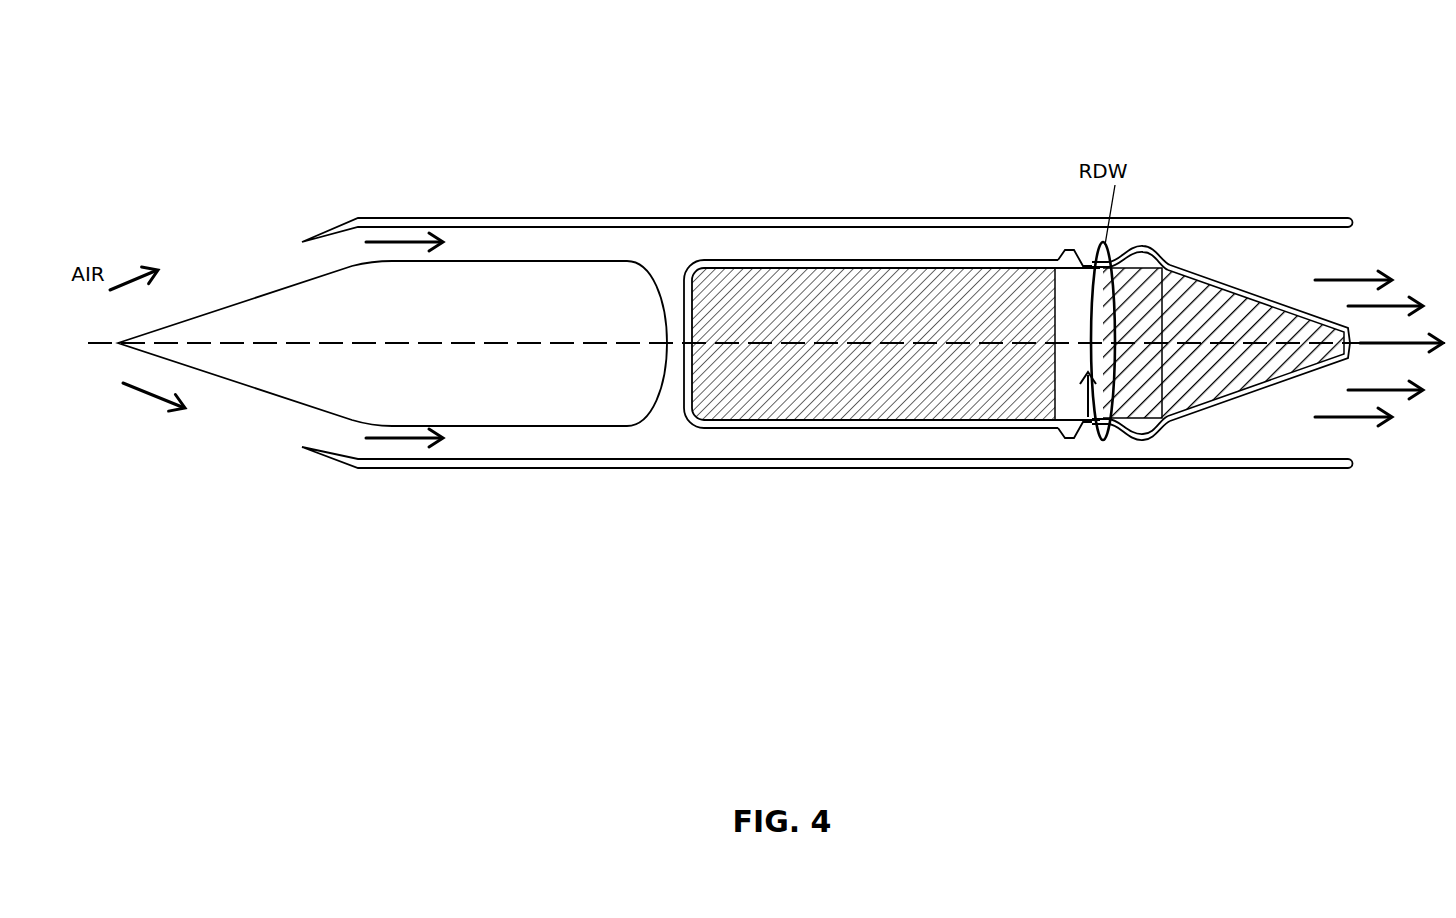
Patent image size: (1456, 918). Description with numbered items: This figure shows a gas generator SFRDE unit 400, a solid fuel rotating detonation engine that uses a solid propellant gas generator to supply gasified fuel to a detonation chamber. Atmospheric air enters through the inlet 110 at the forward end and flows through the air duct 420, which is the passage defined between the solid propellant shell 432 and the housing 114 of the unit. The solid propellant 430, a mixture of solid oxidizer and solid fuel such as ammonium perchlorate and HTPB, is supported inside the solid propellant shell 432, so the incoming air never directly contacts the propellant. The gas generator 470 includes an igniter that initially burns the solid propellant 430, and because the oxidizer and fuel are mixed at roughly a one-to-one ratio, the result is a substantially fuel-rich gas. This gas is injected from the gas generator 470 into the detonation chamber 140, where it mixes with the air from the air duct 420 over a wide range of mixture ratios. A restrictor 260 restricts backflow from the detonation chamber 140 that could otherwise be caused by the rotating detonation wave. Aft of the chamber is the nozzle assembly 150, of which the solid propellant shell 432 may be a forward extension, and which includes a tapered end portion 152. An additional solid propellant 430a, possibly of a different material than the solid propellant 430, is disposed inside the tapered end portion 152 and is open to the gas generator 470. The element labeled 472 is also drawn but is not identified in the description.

The inlet 110 is at (241, 262).
The housing 114 is at (393, 216).
The gas generator SFRDE unit 400 is at (700, 523).
The air duct 420 is at (842, 245).
The solid propellant 430 is at (766, 280).
The solid propellant shell 432 is at (973, 262).
The restrictor 260 is at (1075, 250).
The detonation chamber 140 is at (1117, 242).
The lower diaphragm portion 472 is at (1125, 428).
The gas generator 470 is at (1076, 362).
The nozzle assembly 150 is at (1248, 265).
The tapered end portion 152 is at (1283, 318).
The additional solid propellant 430a is at (1177, 362).